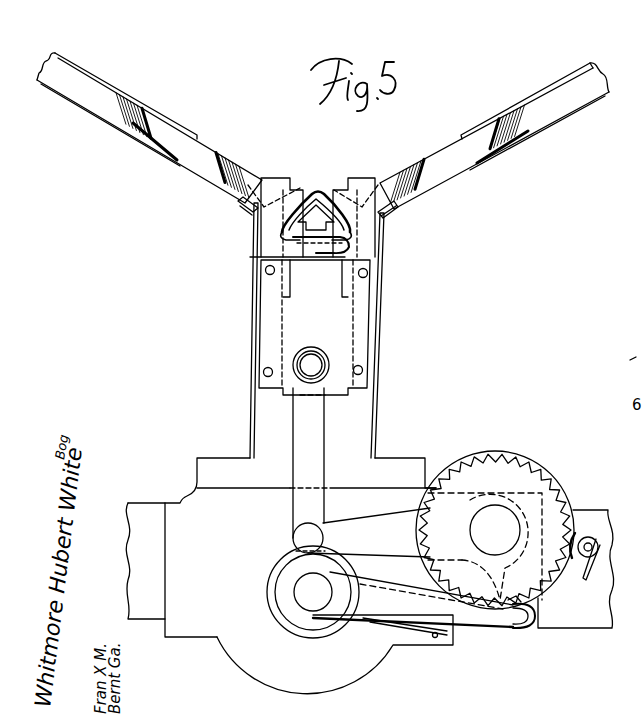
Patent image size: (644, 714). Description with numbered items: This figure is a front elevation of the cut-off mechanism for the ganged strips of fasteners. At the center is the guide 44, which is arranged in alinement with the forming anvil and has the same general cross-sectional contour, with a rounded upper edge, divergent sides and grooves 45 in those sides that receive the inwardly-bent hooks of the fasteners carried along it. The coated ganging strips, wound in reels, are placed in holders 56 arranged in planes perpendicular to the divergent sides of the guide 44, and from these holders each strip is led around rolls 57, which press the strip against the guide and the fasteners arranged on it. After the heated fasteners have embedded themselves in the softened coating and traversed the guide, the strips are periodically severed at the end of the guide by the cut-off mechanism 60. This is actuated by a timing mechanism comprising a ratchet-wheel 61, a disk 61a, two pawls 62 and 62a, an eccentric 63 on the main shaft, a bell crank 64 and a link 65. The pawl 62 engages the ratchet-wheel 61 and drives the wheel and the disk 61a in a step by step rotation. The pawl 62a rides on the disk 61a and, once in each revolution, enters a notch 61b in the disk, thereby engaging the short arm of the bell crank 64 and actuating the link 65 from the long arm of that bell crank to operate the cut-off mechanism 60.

The guide 44 is at (318, 198).
The grooves 45 is at (231, 327).
The holders 56 is at (564, 118).
The rolls 57 is at (407, 194).
The cut-off mechanism 60 is at (333, 313).
The ratchet-wheel 61 is at (517, 512).
The disk 61a is at (541, 463).
The notch 61b is at (512, 452).
The pawl 62 is at (505, 630).
The pawl 62a is at (527, 631).
The eccentric 63 is at (313, 612).
The bell crank 64 is at (383, 518).
The link 65 is at (320, 430).